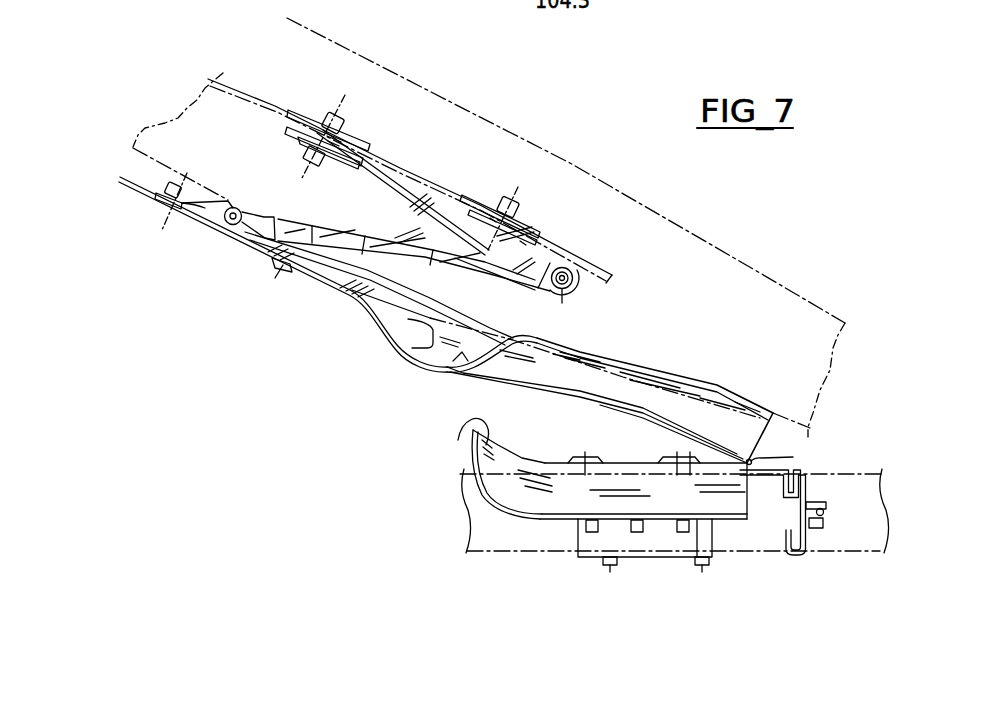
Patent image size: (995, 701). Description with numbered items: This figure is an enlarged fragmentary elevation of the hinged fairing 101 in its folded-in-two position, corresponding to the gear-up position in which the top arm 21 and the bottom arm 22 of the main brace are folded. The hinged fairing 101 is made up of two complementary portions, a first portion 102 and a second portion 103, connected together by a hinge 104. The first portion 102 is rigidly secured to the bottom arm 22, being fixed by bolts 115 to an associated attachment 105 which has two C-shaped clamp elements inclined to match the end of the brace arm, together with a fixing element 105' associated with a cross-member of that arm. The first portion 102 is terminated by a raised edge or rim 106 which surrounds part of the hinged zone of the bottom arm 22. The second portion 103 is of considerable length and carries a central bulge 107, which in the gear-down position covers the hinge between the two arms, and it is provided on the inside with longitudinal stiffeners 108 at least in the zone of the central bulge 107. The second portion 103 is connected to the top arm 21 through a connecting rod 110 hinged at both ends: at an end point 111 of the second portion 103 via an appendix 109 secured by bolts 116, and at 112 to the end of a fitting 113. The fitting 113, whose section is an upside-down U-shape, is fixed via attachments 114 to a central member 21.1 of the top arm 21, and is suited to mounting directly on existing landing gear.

The top arm 21 is at (687, 231).
The central member 21.1 is at (251, 96).
The bottom arm 22 is at (537, 553).
The hinged fairing 101 is at (455, 405).
The first portion 102 is at (626, 485).
The second portion 103 is at (563, 387).
The hinge 104 is at (766, 461).
The attachment 105 is at (645, 300).
The fixing element 105' is at (811, 487).
The raised edge or rim 106 is at (460, 440).
The central bulge 107 is at (467, 375).
The longitudinal stiffeners 108 is at (410, 322).
The appendix 109 is at (215, 223).
The connecting rod 110 is at (382, 247).
The end point 111 is at (244, 207).
The hinge point 112 is at (570, 294).
The fitting 113 is at (433, 210).
The attachments 114 is at (347, 130).
The bolts 115 is at (583, 460).
The bolts 116 is at (160, 208).